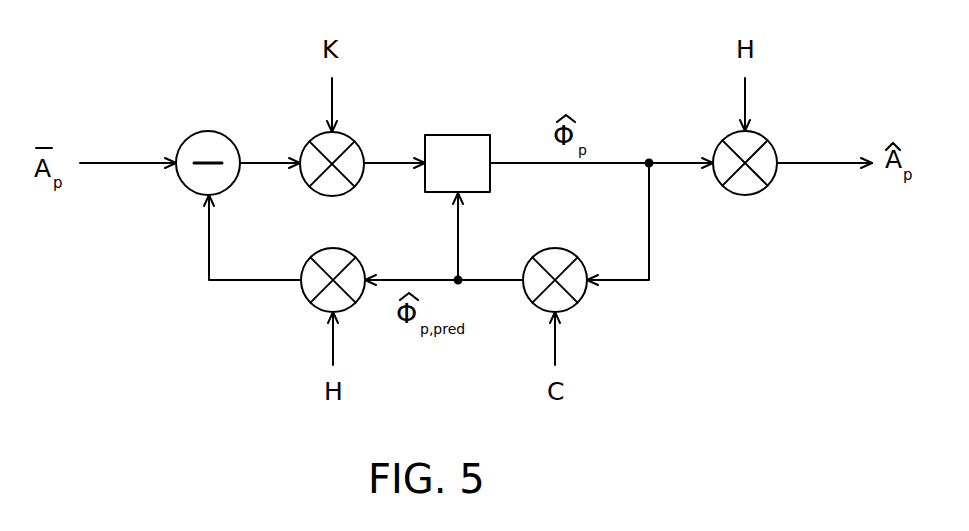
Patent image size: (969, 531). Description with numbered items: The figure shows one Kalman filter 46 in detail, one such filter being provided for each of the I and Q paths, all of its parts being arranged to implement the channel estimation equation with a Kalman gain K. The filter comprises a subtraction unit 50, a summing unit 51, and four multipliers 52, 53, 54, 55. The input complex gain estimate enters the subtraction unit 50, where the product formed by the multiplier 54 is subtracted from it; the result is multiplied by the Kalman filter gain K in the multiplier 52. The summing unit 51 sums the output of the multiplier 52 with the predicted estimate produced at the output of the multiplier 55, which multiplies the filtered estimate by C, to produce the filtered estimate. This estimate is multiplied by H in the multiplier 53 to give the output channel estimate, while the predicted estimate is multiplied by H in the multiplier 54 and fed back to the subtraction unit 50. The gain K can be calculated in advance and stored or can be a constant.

The Kalman filter 46 is at (536, 62).
The subtraction unit 50 is at (202, 140).
The summing unit 51 is at (437, 135).
The multiplier 52 is at (321, 136).
The multiplier 53 is at (736, 137).
The multiplier 54 is at (322, 299).
The multiplier 55 is at (542, 299).